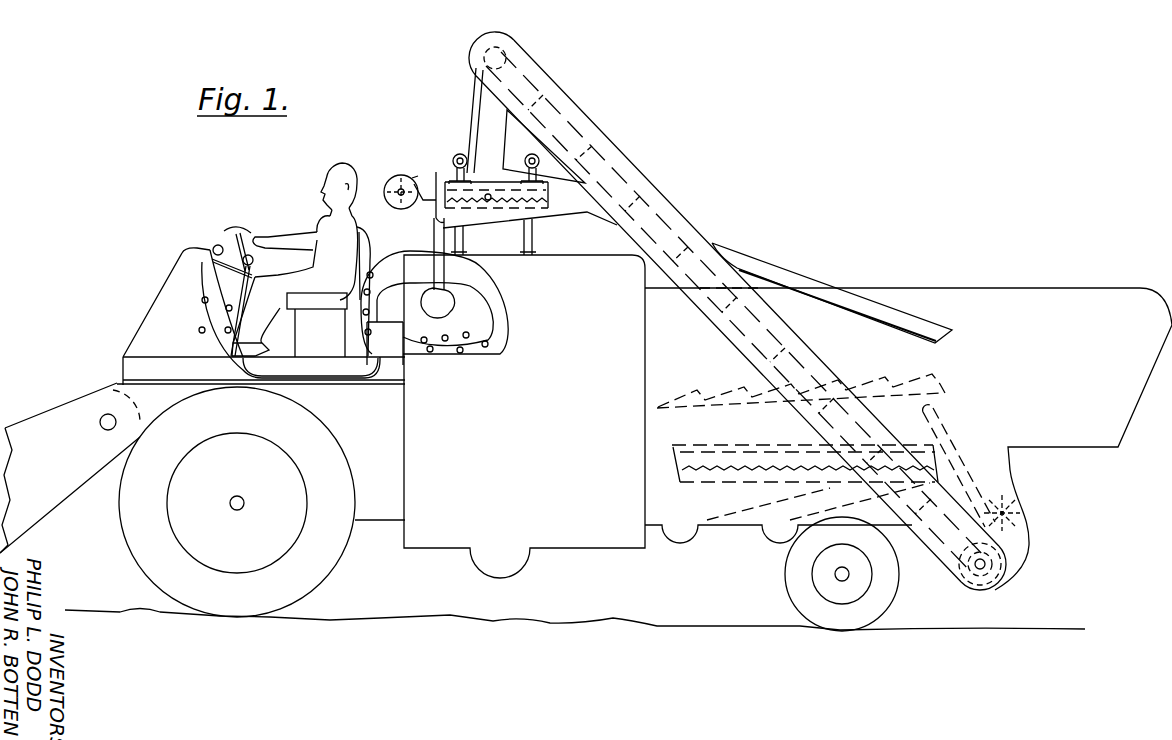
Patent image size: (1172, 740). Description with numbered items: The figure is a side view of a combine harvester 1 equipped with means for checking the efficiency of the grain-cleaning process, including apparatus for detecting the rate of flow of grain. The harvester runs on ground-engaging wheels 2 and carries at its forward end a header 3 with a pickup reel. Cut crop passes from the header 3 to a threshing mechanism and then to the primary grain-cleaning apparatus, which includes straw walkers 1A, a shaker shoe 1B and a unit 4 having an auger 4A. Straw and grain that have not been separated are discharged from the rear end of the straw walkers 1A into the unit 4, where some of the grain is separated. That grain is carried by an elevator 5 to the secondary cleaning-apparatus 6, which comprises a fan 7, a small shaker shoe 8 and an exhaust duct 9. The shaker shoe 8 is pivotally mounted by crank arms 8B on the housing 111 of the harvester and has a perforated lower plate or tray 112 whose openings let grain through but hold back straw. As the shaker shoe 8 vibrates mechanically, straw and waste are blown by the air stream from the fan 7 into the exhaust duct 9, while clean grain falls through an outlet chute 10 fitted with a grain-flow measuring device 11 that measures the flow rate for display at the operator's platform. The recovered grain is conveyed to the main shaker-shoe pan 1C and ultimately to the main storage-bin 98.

The combine harvester 1 is at (866, 222).
The straw walkers 1A is at (712, 385).
The shaker shoe 1B is at (706, 459).
The main shaker-shoe pan 1C is at (752, 518).
The ground-engaging wheels 2 is at (252, 600).
The header 3 is at (50, 458).
The unit 4 is at (963, 478).
The auger 4A is at (1004, 576).
The elevator 5 is at (580, 114).
The secondary cleaning-apparatus 6 is at (470, 138).
The fan 7 is at (410, 170).
The small shaker shoe 8 is at (442, 170).
The crank arms 8B is at (453, 157).
The exhaust duct 9 is at (587, 212).
The outlet chute 10 is at (436, 228).
The grain-flow measuring device 11 is at (447, 307).
The main storage-bin 98 is at (612, 250).
The housing 111 is at (998, 292).
The perforated lower plate or tray 112 is at (508, 220).